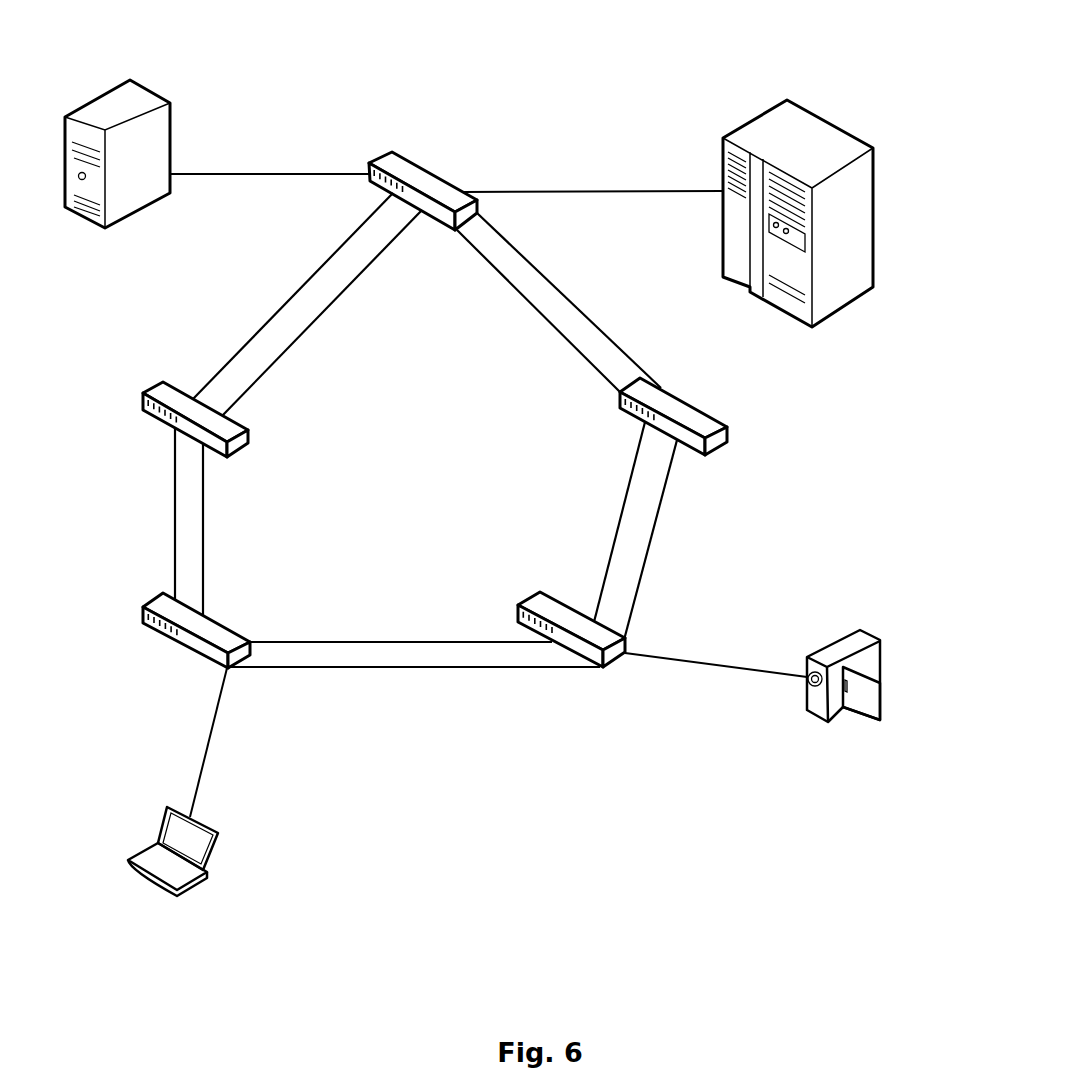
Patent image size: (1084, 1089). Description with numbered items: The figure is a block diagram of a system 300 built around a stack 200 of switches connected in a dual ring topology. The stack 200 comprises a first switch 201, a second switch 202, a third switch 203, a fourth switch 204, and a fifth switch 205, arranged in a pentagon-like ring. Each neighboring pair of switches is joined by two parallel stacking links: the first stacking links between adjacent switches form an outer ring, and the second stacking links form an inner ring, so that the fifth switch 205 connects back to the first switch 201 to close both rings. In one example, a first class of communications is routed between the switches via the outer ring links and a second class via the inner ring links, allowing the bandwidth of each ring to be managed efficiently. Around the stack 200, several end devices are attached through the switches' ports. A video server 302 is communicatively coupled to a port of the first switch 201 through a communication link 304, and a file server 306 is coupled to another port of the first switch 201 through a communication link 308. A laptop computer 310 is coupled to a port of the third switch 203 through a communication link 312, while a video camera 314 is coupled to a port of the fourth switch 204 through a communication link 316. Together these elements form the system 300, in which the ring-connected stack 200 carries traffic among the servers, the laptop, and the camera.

The stack 200 is at (798, 507).
The first switch 201 is at (413, 163).
The second switch 202 is at (147, 392).
The third switch 203 is at (167, 638).
The fourth switch 204 is at (607, 668).
The fifth switch 205 is at (727, 427).
The system 300 is at (545, 55).
The video server 302 is at (96, 92).
The communication link 304 is at (270, 174).
The file server 306 is at (840, 128).
The communication link 308 is at (592, 191).
The laptop computer 310 is at (195, 885).
The communication link 312 is at (210, 752).
The video camera 314 is at (833, 722).
The communication link 316 is at (718, 663).